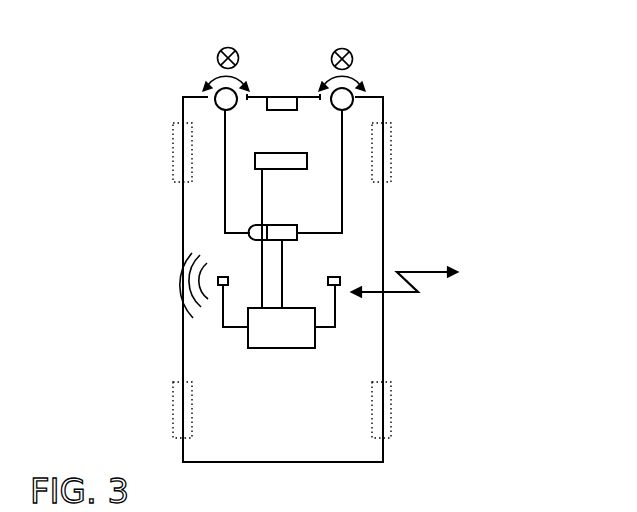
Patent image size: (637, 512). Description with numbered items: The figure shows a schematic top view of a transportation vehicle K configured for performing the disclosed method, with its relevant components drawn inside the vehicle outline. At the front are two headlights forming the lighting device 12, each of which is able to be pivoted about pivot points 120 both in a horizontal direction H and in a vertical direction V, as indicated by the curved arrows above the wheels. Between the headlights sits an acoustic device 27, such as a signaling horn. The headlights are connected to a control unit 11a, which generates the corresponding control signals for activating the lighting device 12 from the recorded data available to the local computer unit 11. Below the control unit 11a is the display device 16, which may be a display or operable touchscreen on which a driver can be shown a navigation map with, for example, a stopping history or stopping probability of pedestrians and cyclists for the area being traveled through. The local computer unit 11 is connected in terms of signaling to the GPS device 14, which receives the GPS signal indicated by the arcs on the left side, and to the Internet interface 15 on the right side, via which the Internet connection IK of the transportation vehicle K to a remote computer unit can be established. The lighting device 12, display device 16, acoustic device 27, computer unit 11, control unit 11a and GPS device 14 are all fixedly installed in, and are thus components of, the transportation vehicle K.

The local computer unit 11 is at (251, 347).
The control unit 11a is at (297, 237).
The lighting device 12 is at (223, 113).
The pivot points 120 is at (217, 107).
The GPS device 14 is at (217, 278).
The Internet interface 15 is at (340, 285).
The display device 16 is at (272, 153).
The acoustic device 27 is at (292, 109).
The transportation vehicle K is at (158, 187).
The vertical direction V is at (343, 47).
The horizontal direction H is at (342, 75).
The GPS signal GPS is at (177, 292).
The Internet connection IK is at (427, 272).